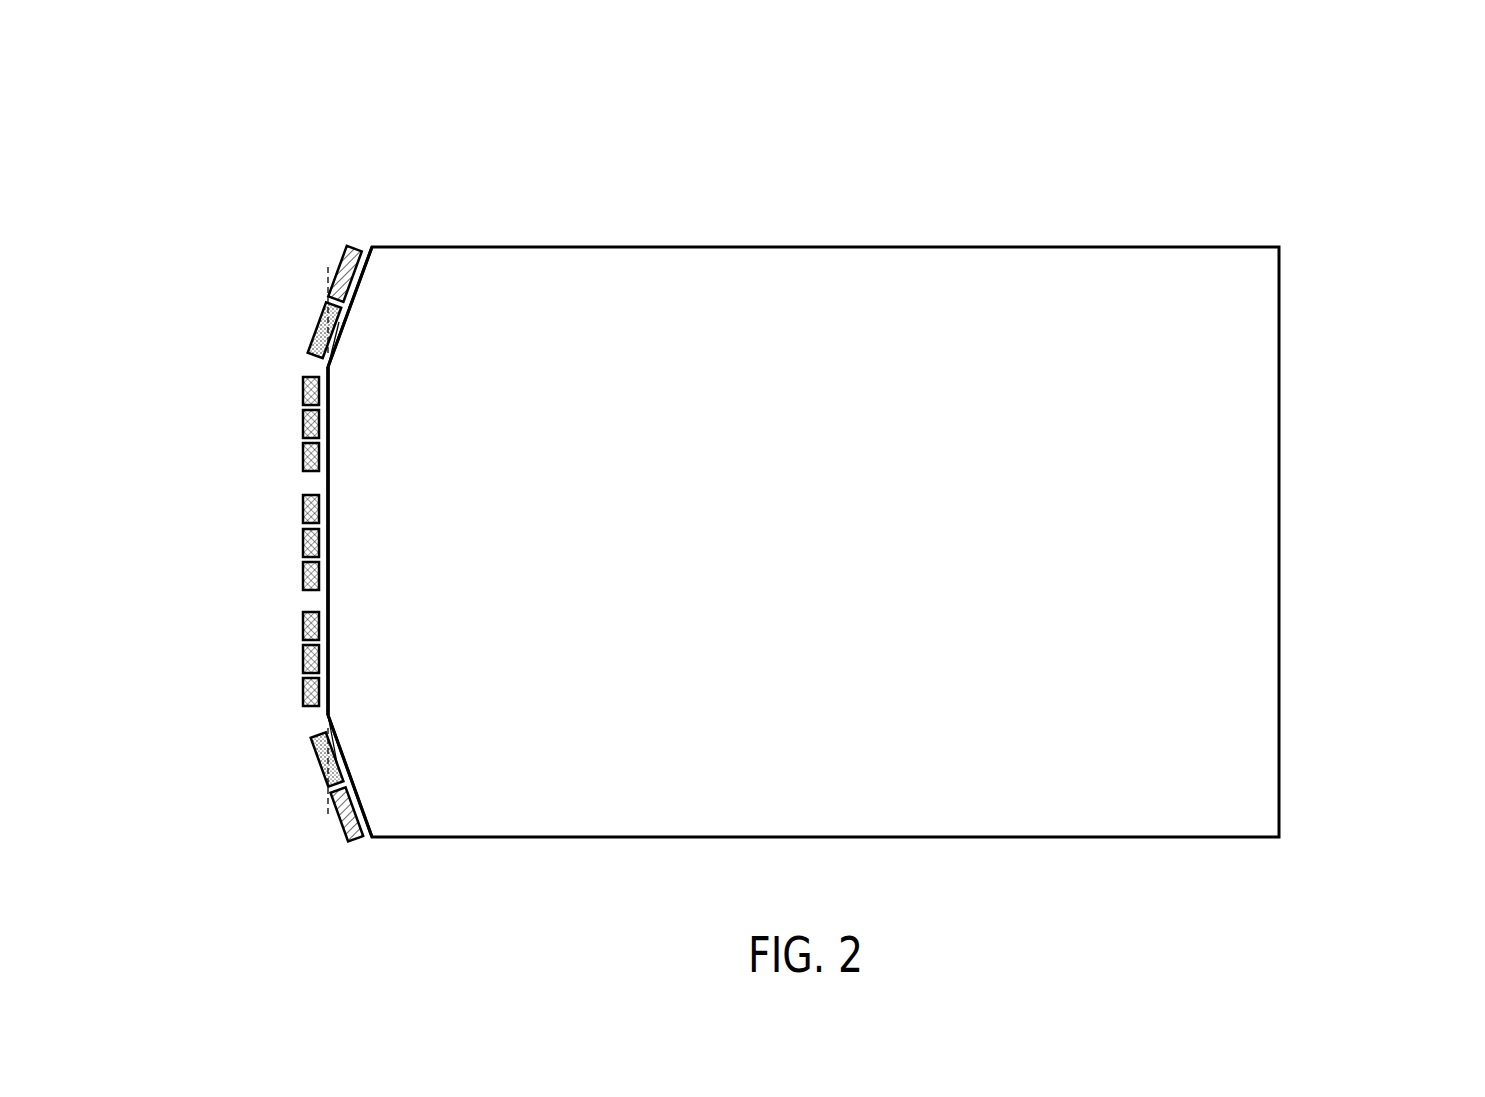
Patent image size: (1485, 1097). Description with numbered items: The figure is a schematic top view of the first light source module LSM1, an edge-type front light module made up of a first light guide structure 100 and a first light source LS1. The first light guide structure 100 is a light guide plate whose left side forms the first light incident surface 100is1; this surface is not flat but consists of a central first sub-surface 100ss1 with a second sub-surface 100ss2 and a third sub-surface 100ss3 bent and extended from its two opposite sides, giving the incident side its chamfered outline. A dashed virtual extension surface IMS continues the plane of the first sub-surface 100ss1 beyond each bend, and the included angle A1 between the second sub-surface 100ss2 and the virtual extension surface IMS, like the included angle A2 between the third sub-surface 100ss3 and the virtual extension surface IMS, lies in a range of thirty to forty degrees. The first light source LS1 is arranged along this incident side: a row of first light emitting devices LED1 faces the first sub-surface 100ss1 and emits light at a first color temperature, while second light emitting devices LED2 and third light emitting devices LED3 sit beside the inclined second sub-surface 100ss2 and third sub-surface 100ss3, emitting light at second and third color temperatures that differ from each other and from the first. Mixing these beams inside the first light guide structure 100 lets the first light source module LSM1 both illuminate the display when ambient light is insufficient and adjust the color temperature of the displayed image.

The first light guide structure 100 is at (1250, 630).
The first light incident surface 100is1 is at (190, 60).
The first sub-surface 100ss1 is at (326, 487).
The second sub-surface 100ss2 is at (362, 268).
The third sub-surface 100ss3 is at (364, 815).
The first light source LS1 is at (405, 60).
The first light emitting devices LED1 is at (304, 427).
The second light emitting devices LED2 is at (313, 335).
The third light emitting devices LED3 is at (357, 250).
The virtual extension surface IMS is at (327, 279).
The included angle A1 is at (339, 322).
The included angle A2 is at (337, 763).
The first light source module LSM1 is at (1470, 922).